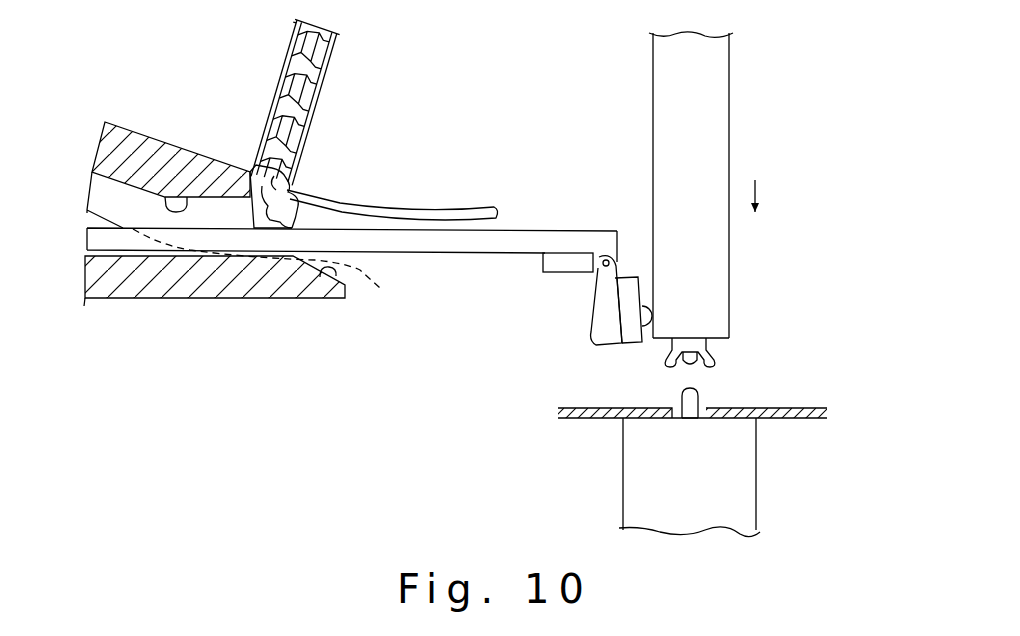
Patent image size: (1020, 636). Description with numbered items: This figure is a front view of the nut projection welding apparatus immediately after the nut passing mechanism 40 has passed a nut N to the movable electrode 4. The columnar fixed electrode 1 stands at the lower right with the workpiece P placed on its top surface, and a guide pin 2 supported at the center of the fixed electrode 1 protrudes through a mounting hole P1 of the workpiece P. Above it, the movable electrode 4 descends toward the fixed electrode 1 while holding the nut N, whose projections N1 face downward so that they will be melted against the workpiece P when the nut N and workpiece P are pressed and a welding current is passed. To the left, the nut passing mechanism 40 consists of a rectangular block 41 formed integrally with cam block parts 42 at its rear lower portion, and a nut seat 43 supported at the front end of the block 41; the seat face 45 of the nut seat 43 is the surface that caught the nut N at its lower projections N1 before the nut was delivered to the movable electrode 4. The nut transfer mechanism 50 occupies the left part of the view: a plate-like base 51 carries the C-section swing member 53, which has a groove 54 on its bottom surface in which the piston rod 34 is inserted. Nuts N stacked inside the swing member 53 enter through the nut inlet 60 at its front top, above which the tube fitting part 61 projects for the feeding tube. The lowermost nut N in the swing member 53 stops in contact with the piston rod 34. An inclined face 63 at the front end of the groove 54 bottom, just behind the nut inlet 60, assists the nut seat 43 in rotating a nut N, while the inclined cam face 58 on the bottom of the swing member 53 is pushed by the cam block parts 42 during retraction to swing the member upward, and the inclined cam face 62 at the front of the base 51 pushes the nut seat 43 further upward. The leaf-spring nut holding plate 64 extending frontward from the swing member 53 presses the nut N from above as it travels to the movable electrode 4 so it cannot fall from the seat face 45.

The nut transfer mechanism 50 is at (205, 82).
The tube fitting part 61 is at (336, 58).
The nut inlet 60 is at (257, 170).
The inclined face 63 is at (167, 197).
The swing member 53 is at (120, 123).
The groove 54 is at (100, 205).
The nut holding plate 64 is at (452, 210).
The piston rod 34 is at (440, 252).
The inclined cam face 58 is at (278, 270).
The base 51 is at (166, 300).
The inclined cam face 62 is at (297, 300).
The nut passing mechanism 40 is at (568, 230).
The block 41 is at (590, 230).
The cam block part 42 is at (553, 272).
The nut seat 43 is at (602, 338).
The seat face 45 is at (647, 338).
The movable electrode 4 is at (729, 78).
The nut N is at (302, 153).
The projection N1 is at (302, 192).
The workpiece P is at (790, 418).
The mounting hole P1 is at (700, 396).
The fixed electrode 1 is at (755, 502).
The guide pin 2 is at (689, 420).